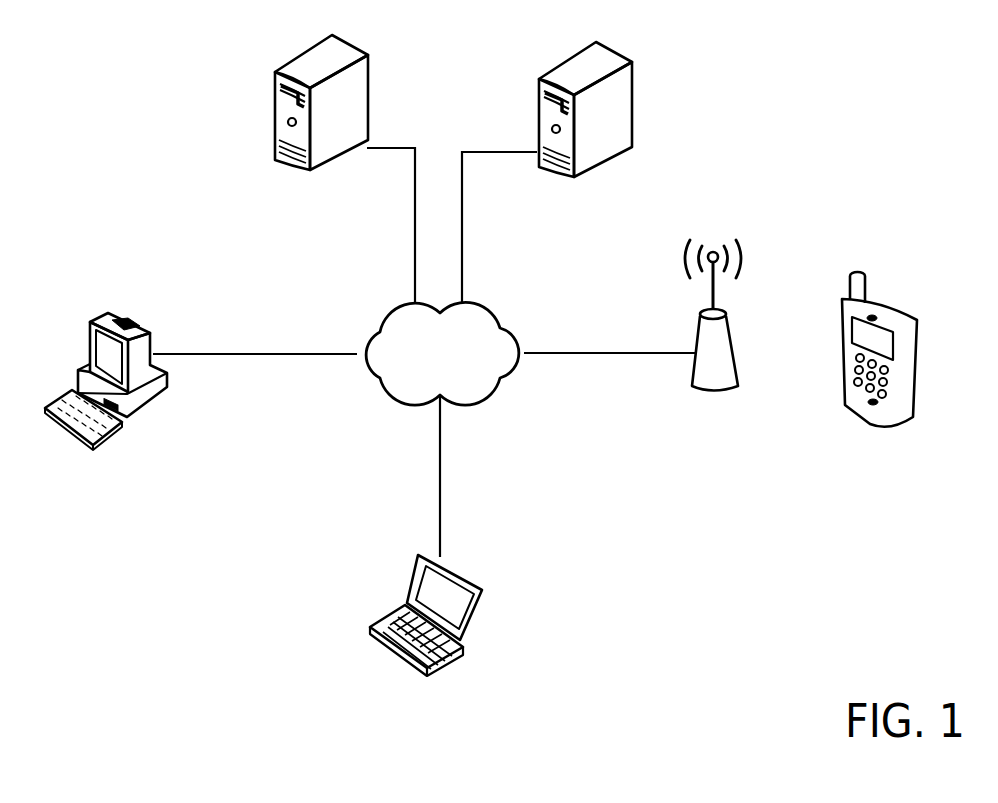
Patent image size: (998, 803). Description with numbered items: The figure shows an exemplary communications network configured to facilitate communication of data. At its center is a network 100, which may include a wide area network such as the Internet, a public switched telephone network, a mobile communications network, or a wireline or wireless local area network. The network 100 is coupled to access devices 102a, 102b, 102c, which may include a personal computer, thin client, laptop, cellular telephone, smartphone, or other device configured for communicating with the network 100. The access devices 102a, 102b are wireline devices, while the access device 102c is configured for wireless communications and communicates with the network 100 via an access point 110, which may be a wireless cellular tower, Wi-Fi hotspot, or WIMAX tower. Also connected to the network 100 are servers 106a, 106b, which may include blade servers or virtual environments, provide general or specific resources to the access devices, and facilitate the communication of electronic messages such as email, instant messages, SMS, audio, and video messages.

The network 100 is at (502, 325).
The access device 102a is at (135, 323).
The access device 102b is at (478, 583).
The access device 102c is at (898, 310).
The server 106a is at (370, 118).
The server 106b is at (633, 127).
The access point 110 is at (695, 325).